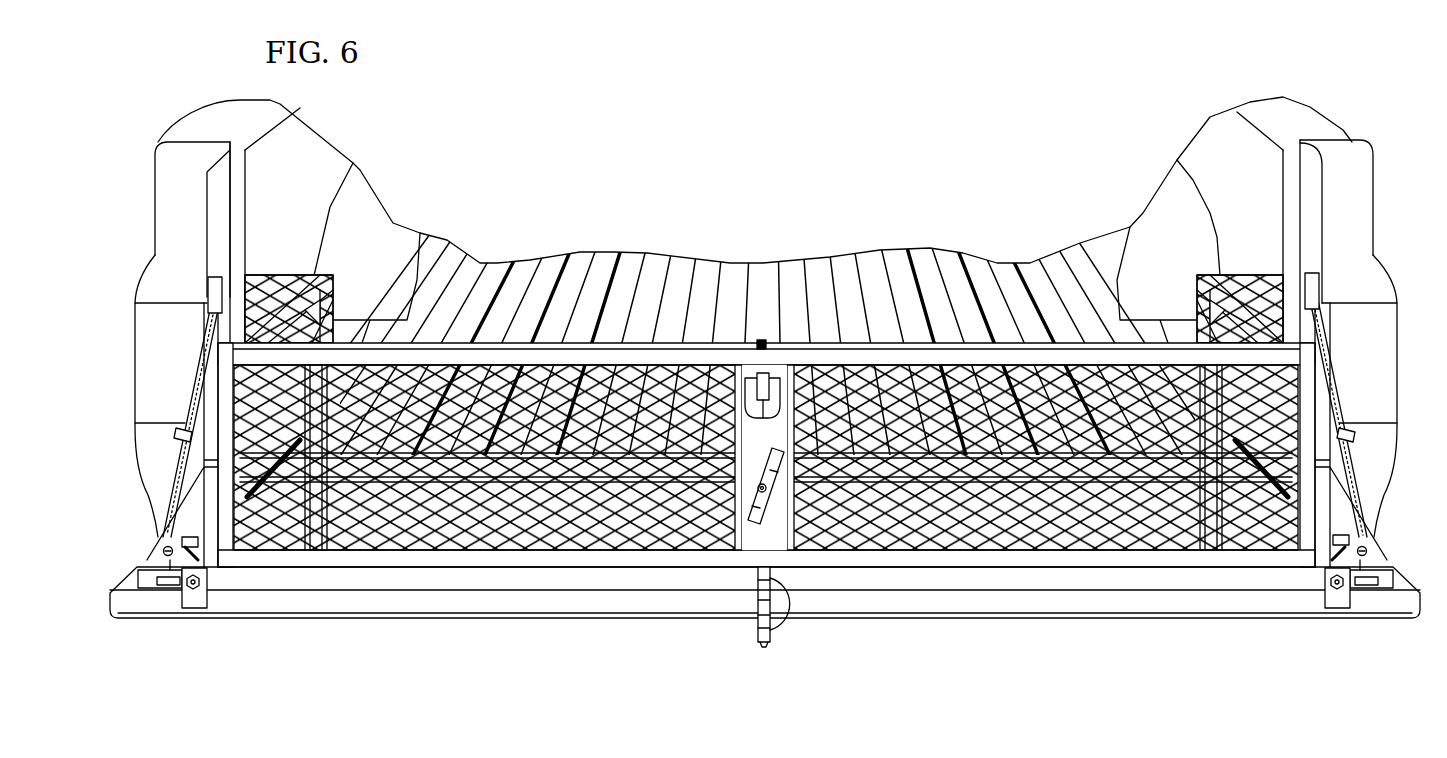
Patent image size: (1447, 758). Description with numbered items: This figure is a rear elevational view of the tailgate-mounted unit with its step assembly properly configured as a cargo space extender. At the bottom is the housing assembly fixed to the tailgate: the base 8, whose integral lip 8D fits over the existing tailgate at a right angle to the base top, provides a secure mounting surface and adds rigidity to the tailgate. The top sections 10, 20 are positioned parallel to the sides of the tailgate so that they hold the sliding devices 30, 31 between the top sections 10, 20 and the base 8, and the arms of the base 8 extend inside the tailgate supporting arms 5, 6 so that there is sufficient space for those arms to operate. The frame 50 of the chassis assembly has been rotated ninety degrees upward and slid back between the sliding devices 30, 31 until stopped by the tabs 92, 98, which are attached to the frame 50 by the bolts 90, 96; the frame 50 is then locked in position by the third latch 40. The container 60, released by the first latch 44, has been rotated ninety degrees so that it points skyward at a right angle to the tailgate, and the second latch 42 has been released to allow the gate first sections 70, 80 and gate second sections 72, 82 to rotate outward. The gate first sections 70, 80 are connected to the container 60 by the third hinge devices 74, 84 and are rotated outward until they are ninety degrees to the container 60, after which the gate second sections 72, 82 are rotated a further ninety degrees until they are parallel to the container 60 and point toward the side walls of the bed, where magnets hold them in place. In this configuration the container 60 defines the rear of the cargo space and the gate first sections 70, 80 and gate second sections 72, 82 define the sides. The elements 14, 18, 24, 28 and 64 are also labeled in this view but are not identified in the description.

The tailgate supporting arm 5 is at (1345, 395).
The tailgate supporting arm 6 is at (188, 410).
The base 8 is at (1130, 610).
The lip 8D is at (353, 610).
The top section 10 is at (1323, 517).
The right pivot bolt 14 is at (1360, 563).
The right strut bracket 18 is at (1353, 543).
The top section 20 is at (203, 500).
The left pivot bolt 24 is at (172, 562).
The left strut bracket 28 is at (163, 538).
The sliding device 30 is at (1387, 580).
The sliding device 31 is at (143, 583).
The third latch 40 is at (773, 637).
The second latch 42 is at (745, 528).
The first latch 44 is at (762, 373).
The frame 50 is at (1063, 578).
The container 60 is at (393, 345).
The mesh panel 64 is at (897, 520).
The first gate section 70 is at (289, 266).
The second gate section 72 is at (264, 277).
The third hinge device 74 is at (1280, 513).
The first gate section 80 is at (1224, 282).
The second gate section 82 is at (1220, 275).
The third hinge device 84 is at (247, 463).
The bolt 90 is at (1327, 588).
The tab 92 is at (1340, 600).
The bolt 96 is at (203, 577).
The tab 98 is at (193, 600).